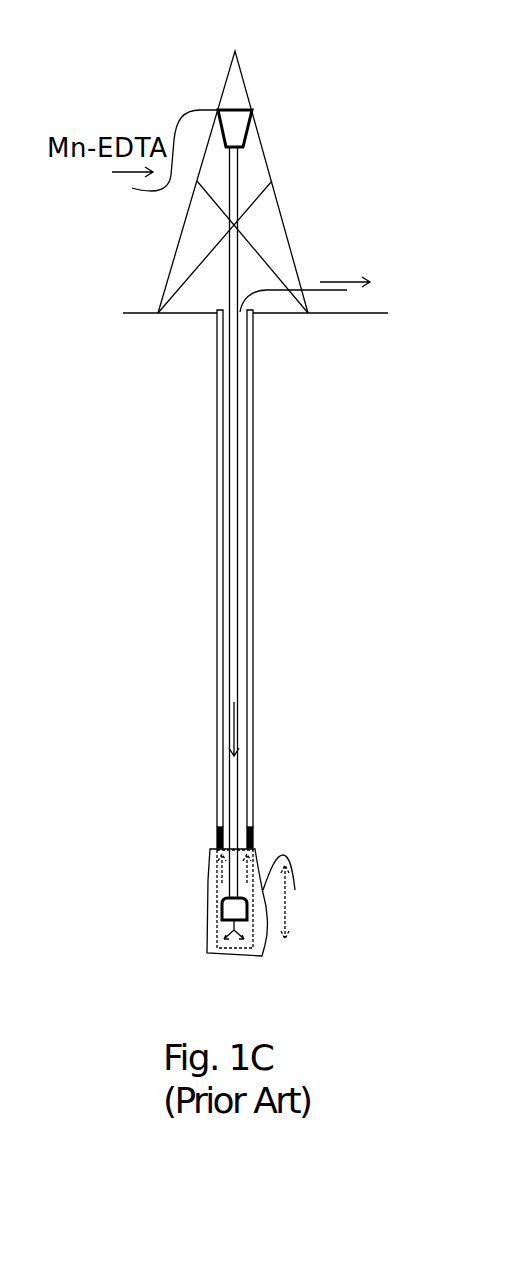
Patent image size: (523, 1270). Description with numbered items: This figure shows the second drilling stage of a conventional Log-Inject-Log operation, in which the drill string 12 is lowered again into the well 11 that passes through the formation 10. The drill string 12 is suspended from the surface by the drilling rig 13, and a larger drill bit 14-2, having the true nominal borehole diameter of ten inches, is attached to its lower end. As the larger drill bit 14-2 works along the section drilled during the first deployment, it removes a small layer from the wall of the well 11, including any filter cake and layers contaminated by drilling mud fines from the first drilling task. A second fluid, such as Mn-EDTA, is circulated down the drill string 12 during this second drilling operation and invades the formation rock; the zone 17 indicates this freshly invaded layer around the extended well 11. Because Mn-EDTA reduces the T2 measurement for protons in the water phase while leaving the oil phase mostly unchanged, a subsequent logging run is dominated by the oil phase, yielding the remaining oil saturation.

The formation 10 is at (322, 790).
The well 11 is at (257, 637).
The drill string 12 is at (229, 280).
The drilling rig 13 is at (292, 143).
The larger drill bit 14-2 is at (222, 912).
The zone 17 is at (262, 956).